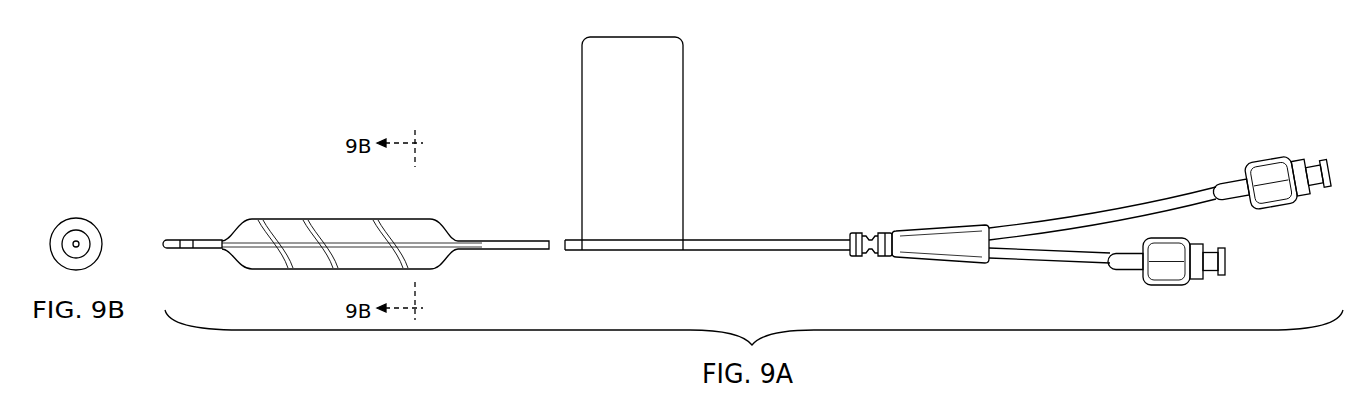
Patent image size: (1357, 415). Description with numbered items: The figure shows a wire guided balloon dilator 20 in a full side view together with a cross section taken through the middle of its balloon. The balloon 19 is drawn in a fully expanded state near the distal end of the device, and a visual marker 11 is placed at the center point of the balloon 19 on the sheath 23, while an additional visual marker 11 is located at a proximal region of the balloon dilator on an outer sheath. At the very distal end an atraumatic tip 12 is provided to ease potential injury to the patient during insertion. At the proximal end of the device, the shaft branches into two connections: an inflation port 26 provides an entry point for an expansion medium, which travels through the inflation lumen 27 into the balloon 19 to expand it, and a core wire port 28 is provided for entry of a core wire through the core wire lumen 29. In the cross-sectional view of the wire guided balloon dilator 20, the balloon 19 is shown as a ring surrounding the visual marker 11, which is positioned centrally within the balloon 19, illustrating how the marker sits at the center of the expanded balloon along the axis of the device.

In FIG. 9B, the visual marker 11 is at (73, 246).
In FIG. 9A, the visual marker 11 is at (340, 244).
In FIG. 9A, the atraumatic tip 12 is at (162, 243).
In FIG. 9B, the balloon 19 is at (73, 219).
In FIG. 9A, the balloon 19 is at (398, 219).
In FIG. 9A, the wire guided balloon dilator 20 is at (250, 143).
In FIG. 9A, the sheath 23 is at (296, 244).
In FIG. 9A, the inflation port 26 is at (1310, 165).
In FIG. 9A, the inflation lumen 27 is at (1125, 207).
In FIG. 9A, the core wire port 28 is at (1208, 280).
In FIG. 9A, the core wire lumen 29 is at (1065, 257).